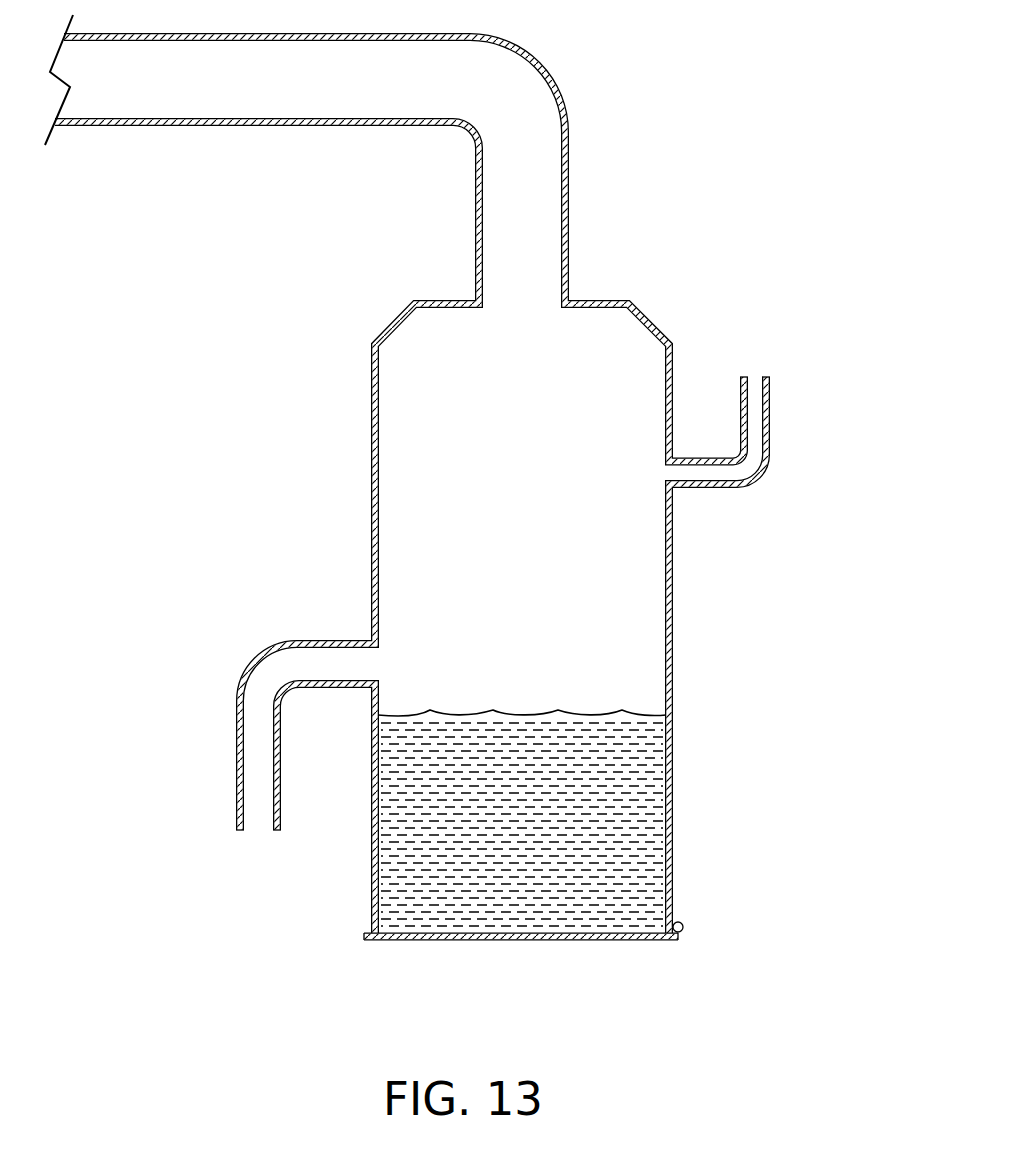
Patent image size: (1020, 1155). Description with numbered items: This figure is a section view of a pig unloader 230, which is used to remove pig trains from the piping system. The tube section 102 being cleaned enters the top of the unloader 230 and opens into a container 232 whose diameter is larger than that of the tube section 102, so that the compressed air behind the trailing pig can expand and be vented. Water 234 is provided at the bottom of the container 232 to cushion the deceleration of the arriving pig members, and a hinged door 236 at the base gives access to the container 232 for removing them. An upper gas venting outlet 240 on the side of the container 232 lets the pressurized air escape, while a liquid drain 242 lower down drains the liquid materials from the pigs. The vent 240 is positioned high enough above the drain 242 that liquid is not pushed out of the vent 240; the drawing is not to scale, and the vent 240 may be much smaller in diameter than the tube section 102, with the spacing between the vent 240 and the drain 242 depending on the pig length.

The tube section 102 is at (206, 128).
The unloader 230 is at (451, 516).
The container 232 is at (673, 610).
The water 234 is at (657, 851).
The hinged door 236 is at (597, 940).
The upper gas venting outlet 240 is at (770, 427).
The liquid drain 242 is at (236, 748).